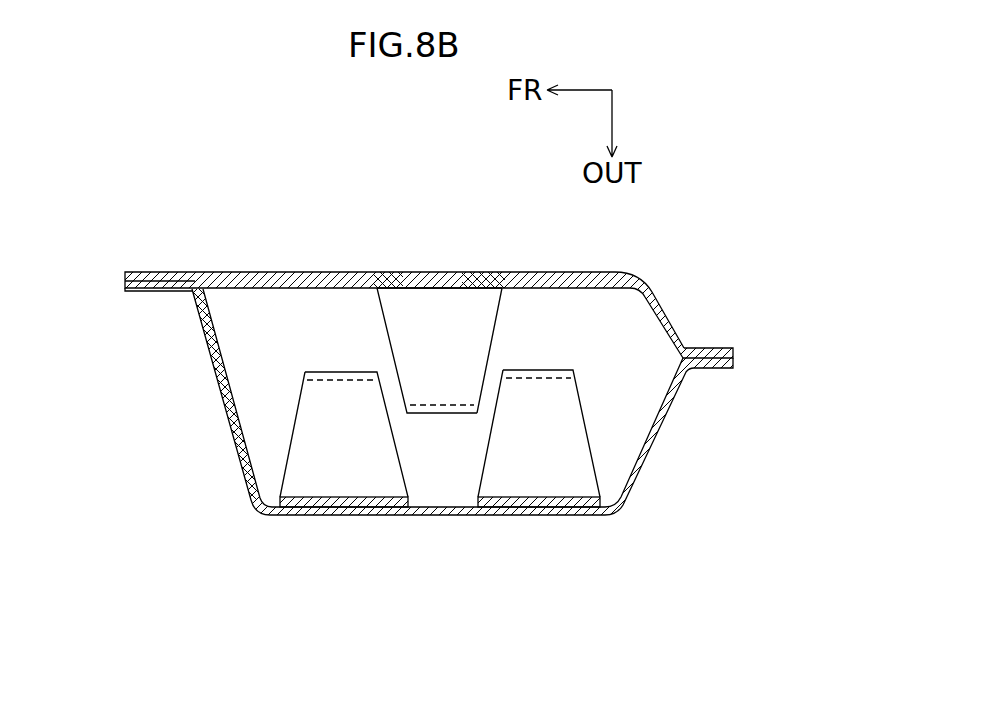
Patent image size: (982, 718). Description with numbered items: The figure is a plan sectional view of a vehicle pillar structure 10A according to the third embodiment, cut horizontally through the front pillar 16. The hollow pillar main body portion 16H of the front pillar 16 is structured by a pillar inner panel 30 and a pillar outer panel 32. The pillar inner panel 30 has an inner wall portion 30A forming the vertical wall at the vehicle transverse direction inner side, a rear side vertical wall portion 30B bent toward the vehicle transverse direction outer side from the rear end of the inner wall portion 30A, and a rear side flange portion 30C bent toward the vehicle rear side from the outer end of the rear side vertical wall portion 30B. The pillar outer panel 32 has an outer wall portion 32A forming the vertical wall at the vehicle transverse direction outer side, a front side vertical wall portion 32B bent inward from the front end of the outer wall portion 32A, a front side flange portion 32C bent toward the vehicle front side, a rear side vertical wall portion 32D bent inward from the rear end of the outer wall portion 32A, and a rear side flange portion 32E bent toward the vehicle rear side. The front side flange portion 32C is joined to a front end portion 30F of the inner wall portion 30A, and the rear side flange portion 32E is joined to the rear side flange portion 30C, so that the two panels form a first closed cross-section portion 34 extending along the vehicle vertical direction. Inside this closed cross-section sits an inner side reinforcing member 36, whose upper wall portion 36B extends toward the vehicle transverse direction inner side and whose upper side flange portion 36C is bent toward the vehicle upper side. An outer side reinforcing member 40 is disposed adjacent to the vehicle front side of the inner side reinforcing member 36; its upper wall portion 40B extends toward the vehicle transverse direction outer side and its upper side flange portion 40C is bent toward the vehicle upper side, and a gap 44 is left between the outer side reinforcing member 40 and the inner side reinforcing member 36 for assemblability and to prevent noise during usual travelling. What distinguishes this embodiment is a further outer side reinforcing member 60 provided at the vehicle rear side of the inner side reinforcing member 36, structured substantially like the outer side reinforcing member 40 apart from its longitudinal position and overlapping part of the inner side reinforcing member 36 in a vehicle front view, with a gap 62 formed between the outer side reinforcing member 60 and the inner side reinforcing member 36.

The vehicle body lower structure 10A is at (280, 583).
The front pillar 16 is at (456, 192).
The pillar main body portion 16H is at (406, 216).
The pillar inner panel 30 is at (357, 238).
The inner wall portion 30A is at (307, 270).
The rear side vertical wall portion 30B is at (668, 317).
The rear side flange portion 30C is at (717, 348).
The front end portion 30F is at (158, 270).
The pillar outer panel 32 is at (605, 531).
The outer wall portion 32A is at (448, 517).
The front side vertical wall portion 32B is at (218, 390).
The front side flange portion 32C is at (162, 293).
The rear side vertical wall portion 32D is at (660, 432).
The rear side flange portion 32E is at (717, 370).
The first closed cross-section portion 34 is at (332, 339).
The inner side reinforcing member 36 is at (447, 430).
The upper wall portion 36B is at (490, 312).
The upper side flange portion 36C is at (442, 290).
The outer side reinforcing member 40 is at (291, 360).
The upper wall portion 40B is at (312, 423).
The upper side flange portion 40C is at (337, 495).
The gap 44 is at (390, 383).
The outer side reinforcing member 60 is at (583, 400).
The gap 62 is at (492, 393).